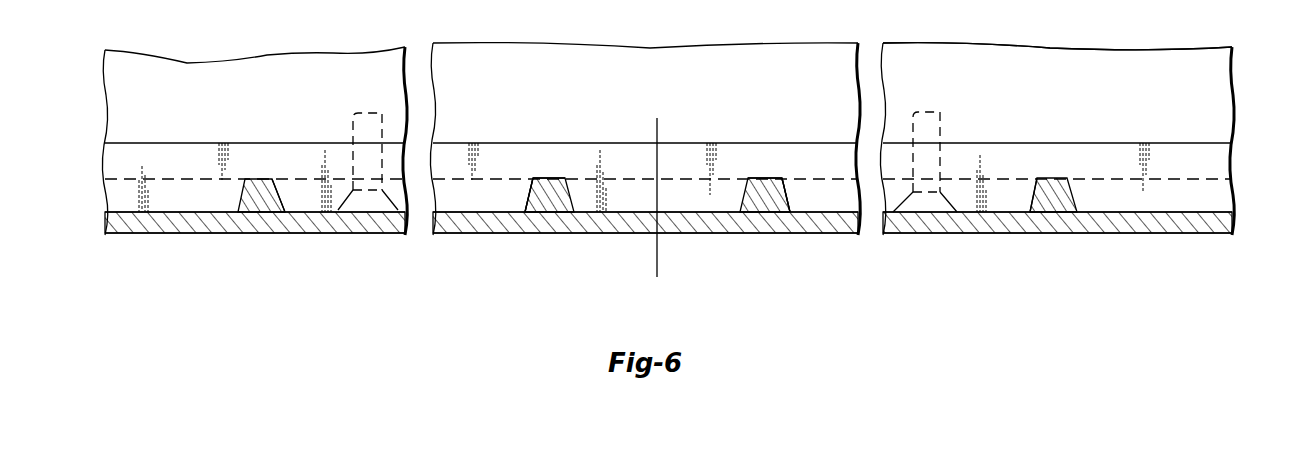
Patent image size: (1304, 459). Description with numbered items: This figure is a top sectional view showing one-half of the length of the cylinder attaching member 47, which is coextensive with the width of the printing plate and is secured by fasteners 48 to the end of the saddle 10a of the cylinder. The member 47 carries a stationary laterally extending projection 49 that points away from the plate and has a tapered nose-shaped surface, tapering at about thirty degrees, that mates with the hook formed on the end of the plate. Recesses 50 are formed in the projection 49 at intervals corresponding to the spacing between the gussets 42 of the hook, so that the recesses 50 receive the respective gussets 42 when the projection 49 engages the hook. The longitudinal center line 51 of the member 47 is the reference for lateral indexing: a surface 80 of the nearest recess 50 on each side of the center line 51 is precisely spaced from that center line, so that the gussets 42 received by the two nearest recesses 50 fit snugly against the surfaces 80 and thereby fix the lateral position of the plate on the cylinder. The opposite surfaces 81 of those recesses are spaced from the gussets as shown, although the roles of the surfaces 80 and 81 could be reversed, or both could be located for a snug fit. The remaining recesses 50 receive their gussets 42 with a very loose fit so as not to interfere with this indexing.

The saddle 10a is at (1215, 77).
The gussets 42 is at (246, 178).
The cylinder attaching member 47 is at (104, 163).
The fasteners 48 is at (370, 148).
The projection 49 is at (104, 190).
The recesses 50 is at (275, 178).
The longitudinal center line 51 is at (657, 248).
The surface 80 is at (558, 195).
The surface 81 is at (531, 195).